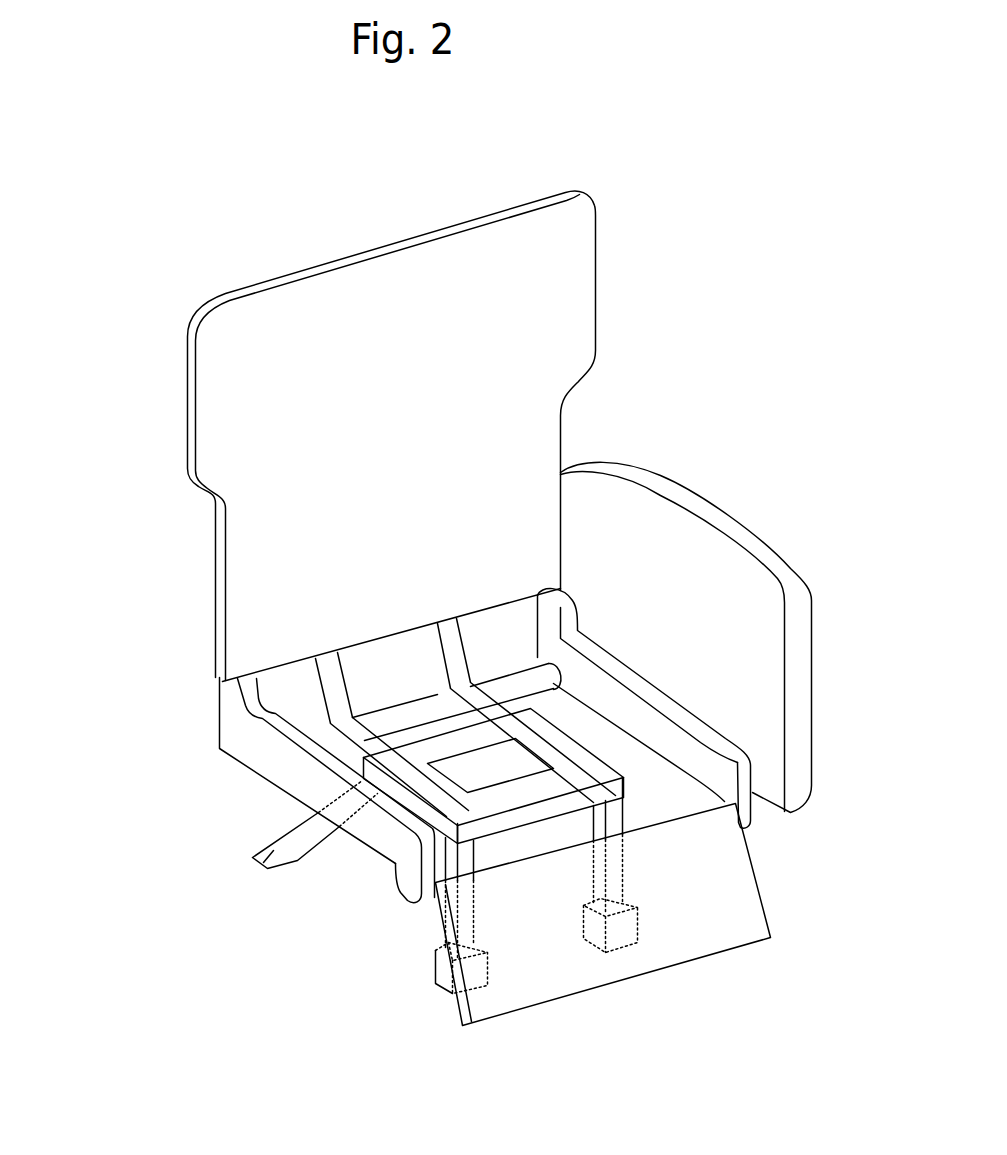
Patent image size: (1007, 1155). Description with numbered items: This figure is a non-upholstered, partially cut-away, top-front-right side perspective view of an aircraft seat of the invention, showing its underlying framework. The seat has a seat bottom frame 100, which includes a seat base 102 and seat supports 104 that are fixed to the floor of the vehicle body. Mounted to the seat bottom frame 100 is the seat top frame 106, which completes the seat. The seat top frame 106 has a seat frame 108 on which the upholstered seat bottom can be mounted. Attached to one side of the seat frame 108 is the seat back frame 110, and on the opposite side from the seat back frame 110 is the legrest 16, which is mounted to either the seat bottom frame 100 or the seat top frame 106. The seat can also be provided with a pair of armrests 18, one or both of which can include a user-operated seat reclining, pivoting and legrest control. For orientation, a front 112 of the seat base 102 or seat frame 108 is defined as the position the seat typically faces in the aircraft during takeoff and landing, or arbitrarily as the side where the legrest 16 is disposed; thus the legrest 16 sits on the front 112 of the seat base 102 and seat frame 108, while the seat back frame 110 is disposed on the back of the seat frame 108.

The seat bottom frame 100 is at (182, 805).
The seat base 102 is at (380, 751).
The seat supports 104 is at (253, 860).
The seat top frame 106 is at (782, 338).
The seat frame 108 is at (494, 776).
The seat back frame 110 is at (552, 290).
The front 112 is at (673, 995).
The legrest 16 is at (727, 880).
The armrests 18 is at (673, 560).